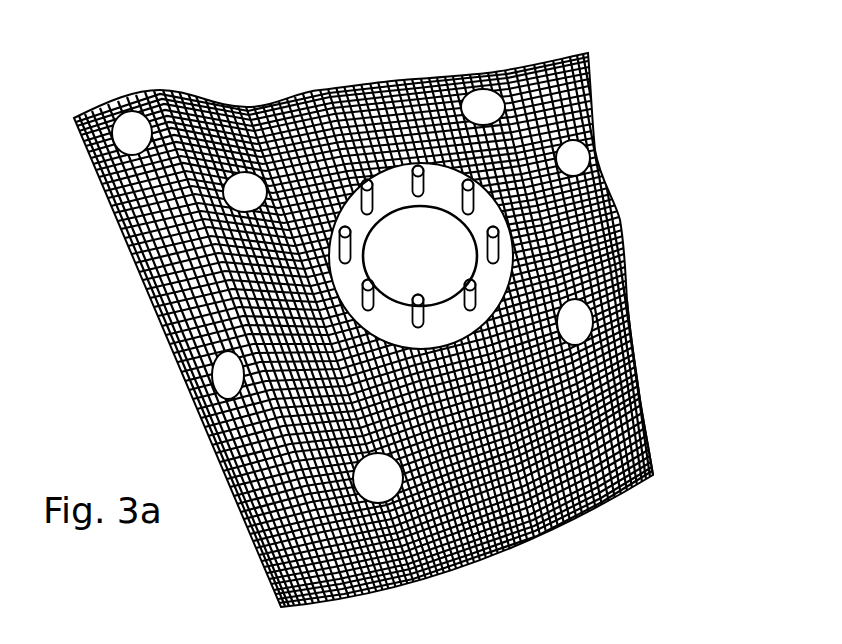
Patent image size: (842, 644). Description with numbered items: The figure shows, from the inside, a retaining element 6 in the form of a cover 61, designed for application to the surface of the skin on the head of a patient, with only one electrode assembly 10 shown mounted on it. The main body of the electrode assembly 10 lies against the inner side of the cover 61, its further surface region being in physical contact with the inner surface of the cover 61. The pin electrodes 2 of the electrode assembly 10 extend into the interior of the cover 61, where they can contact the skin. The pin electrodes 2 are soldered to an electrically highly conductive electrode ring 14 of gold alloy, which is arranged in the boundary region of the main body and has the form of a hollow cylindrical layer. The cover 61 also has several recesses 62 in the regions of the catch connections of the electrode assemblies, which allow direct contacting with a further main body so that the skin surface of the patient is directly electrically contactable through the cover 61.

The electrode assembly 10 is at (343, 105).
The retaining element 6 is at (170, 240).
The cover 61 is at (647, 422).
The recesses 62 is at (572, 158).
The electrode ring 14 is at (487, 281).
The pin electrodes 2 is at (496, 247).